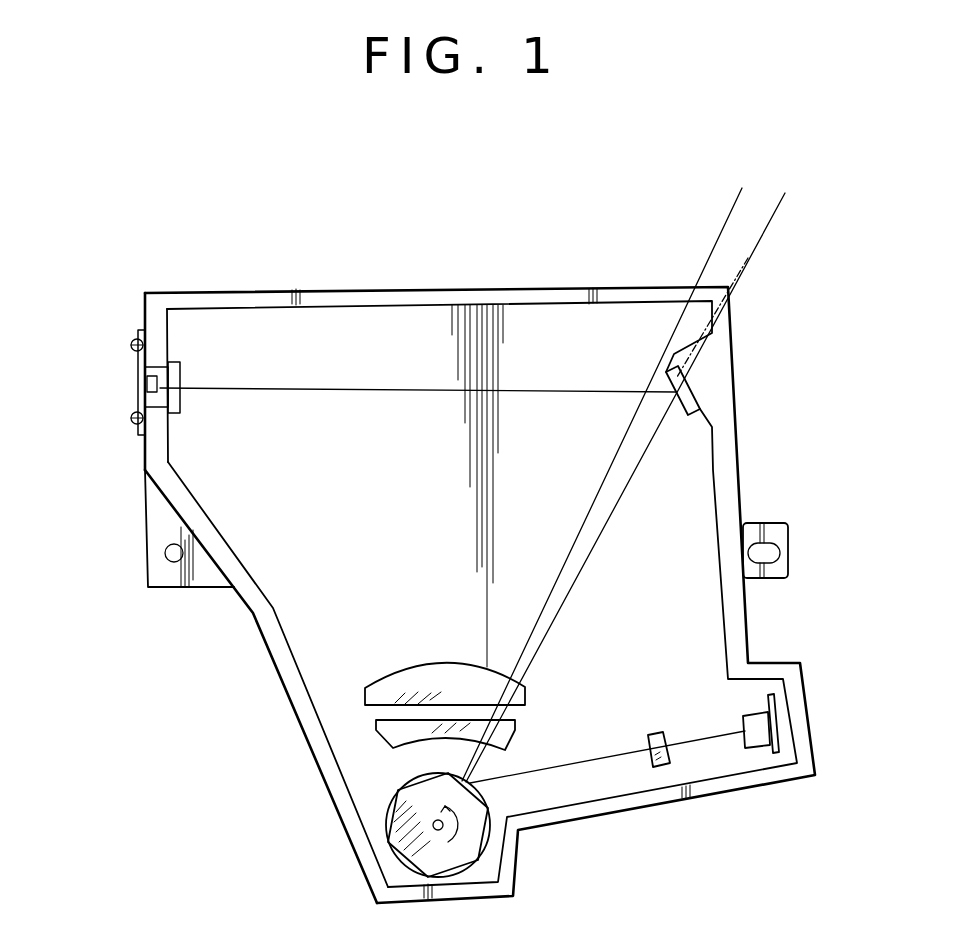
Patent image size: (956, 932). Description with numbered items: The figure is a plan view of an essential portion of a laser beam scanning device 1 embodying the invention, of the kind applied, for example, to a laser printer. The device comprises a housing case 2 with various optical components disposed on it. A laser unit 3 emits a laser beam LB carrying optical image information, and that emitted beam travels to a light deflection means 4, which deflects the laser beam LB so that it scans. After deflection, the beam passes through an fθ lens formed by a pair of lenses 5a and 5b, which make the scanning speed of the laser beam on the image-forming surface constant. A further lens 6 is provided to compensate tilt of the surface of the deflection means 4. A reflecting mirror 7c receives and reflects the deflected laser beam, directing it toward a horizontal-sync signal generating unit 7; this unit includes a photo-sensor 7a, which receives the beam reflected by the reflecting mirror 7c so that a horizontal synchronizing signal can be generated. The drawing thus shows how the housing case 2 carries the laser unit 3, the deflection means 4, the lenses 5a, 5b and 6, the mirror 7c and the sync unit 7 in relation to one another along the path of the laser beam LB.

The housing 1 is at (569, 829).
The housing case 2 is at (305, 733).
The laser unit 3 is at (760, 727).
The light deflection means 4 is at (422, 846).
The lens 5a is at (392, 731).
The lens 5b is at (399, 684).
The lens 6 is at (656, 736).
The horizontal-sync signal generating unit 7 is at (128, 358).
The photo-sensor 7a is at (140, 392).
The reflecting mirror 7c is at (692, 402).
The laser beam LB is at (472, 488).